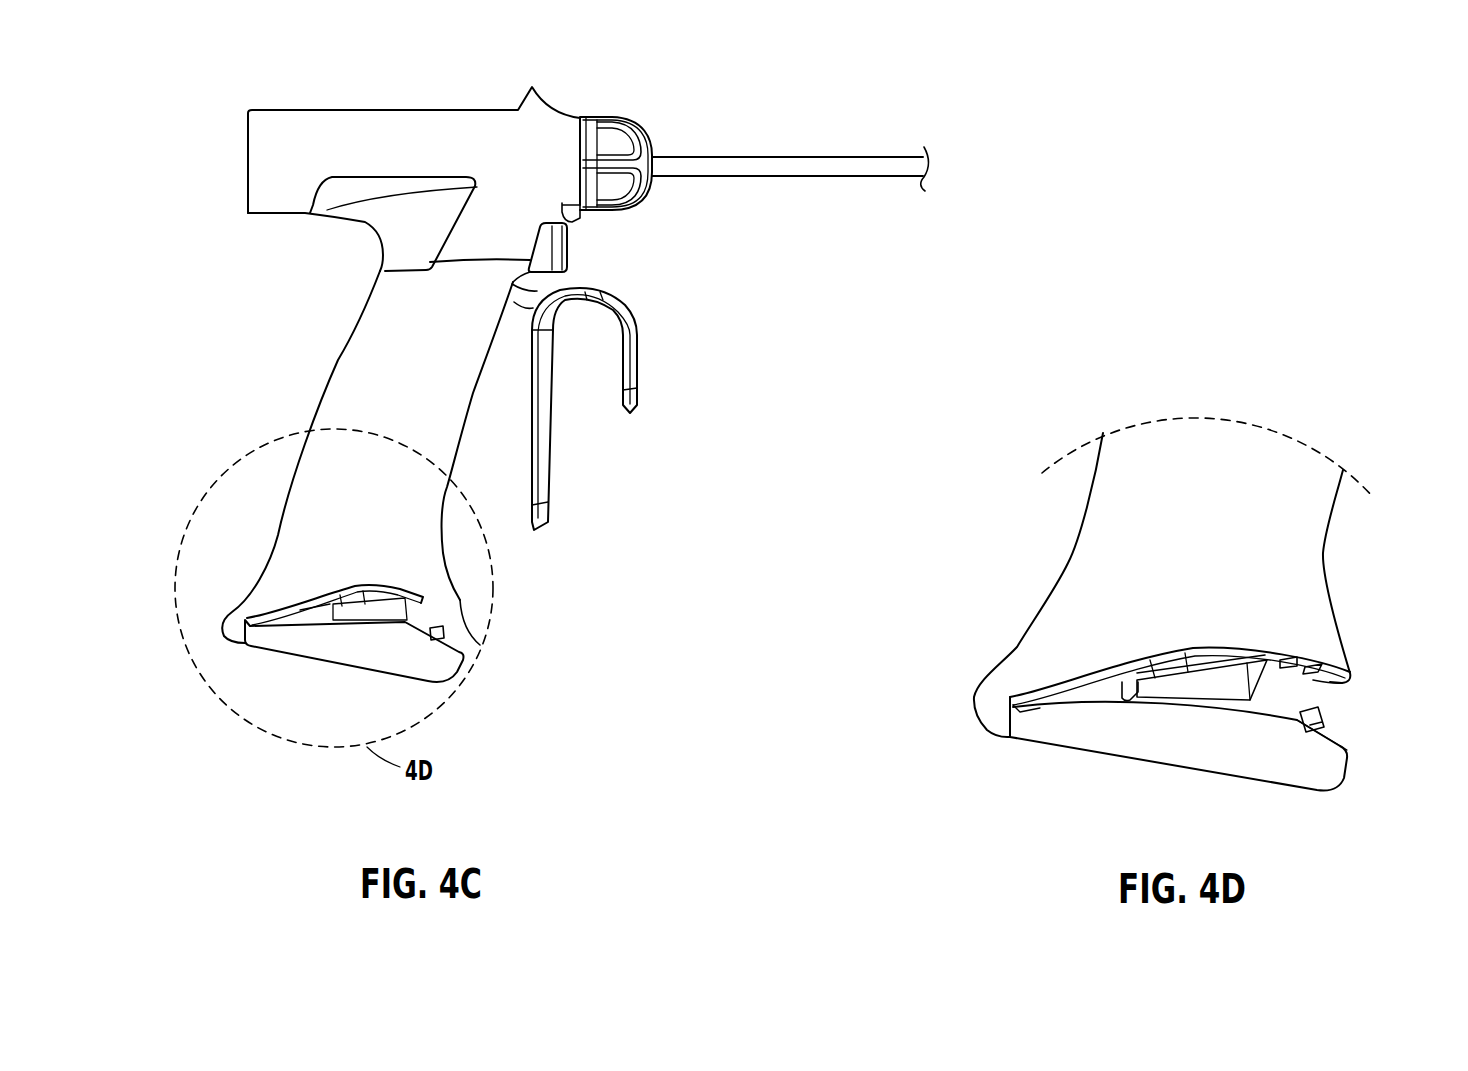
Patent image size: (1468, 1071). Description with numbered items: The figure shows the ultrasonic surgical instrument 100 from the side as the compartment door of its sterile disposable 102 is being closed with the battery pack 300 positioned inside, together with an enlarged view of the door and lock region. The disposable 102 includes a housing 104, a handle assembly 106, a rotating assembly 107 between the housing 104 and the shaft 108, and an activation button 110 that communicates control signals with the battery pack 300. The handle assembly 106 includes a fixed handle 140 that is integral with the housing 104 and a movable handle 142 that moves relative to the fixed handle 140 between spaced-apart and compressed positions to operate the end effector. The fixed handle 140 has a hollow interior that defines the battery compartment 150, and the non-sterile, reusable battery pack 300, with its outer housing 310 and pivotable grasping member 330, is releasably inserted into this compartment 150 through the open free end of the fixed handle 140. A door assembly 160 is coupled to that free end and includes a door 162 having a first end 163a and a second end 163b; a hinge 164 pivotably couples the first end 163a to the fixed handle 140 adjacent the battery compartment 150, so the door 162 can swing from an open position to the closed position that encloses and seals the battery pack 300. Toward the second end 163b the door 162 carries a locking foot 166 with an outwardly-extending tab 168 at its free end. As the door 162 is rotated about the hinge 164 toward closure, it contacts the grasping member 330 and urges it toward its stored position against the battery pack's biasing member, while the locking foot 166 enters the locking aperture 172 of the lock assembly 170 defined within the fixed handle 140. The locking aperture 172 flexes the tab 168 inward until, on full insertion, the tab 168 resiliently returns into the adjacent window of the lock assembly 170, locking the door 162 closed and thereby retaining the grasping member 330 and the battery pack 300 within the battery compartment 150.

In FIG. 4C, the ultrasonic surgical instrument 100 is at (392, 85).
In FIG. 4C, the sterile disposable 102 is at (400, 240).
In FIG. 4C, the housing 104 is at (316, 143).
In FIG. 4C, the handle assembly 106 is at (590, 503).
In FIG. 4C, the rotating assembly 107 is at (617, 113).
In FIG. 4C, the shaft 108 is at (777, 153).
In FIG. 4C, the activation button 110 is at (567, 245).
In FIG. 4C, the fixed handle 140 is at (387, 355).
In FIG. 4D, the fixed handle 140 is at (1305, 530).
In FIG. 4C, the movable handle 142 is at (553, 480).
In FIG. 4D, the battery compartment 150 is at (1290, 663).
In FIG. 4C, the door assembly 160 is at (328, 625).
In FIG. 4C, the door 162 is at (342, 663).
In FIG. 4D, the door 162 is at (1227, 757).
In FIG. 4C, the first end of door 163a is at (252, 650).
In FIG. 4D, the first end of door 163a is at (1037, 743).
In FIG. 4C, the second end of door 163b is at (457, 667).
In FIG. 4D, the second end of door 163b is at (1337, 780).
In FIG. 4C, the hinge 164 is at (243, 630).
In FIG. 4D, the hinge 164 is at (1010, 720).
In FIG. 4C, the locking foot 166 is at (433, 617).
In FIG. 4D, the locking foot 166 is at (1347, 750).
In FIG. 4D, the tab 168 is at (1325, 722).
In FIG. 4C, the lock assembly 170 is at (480, 645).
In FIG. 4D, the lock assembly 170 is at (1330, 682).
In FIG. 4D, the locking aperture 172 is at (1313, 667).
In FIG. 4D, the battery pack 300 is at (1253, 687).
In FIG. 4D, the outer housing 310 is at (1247, 663).
In FIG. 4D, the grasping member 330 is at (1127, 697).